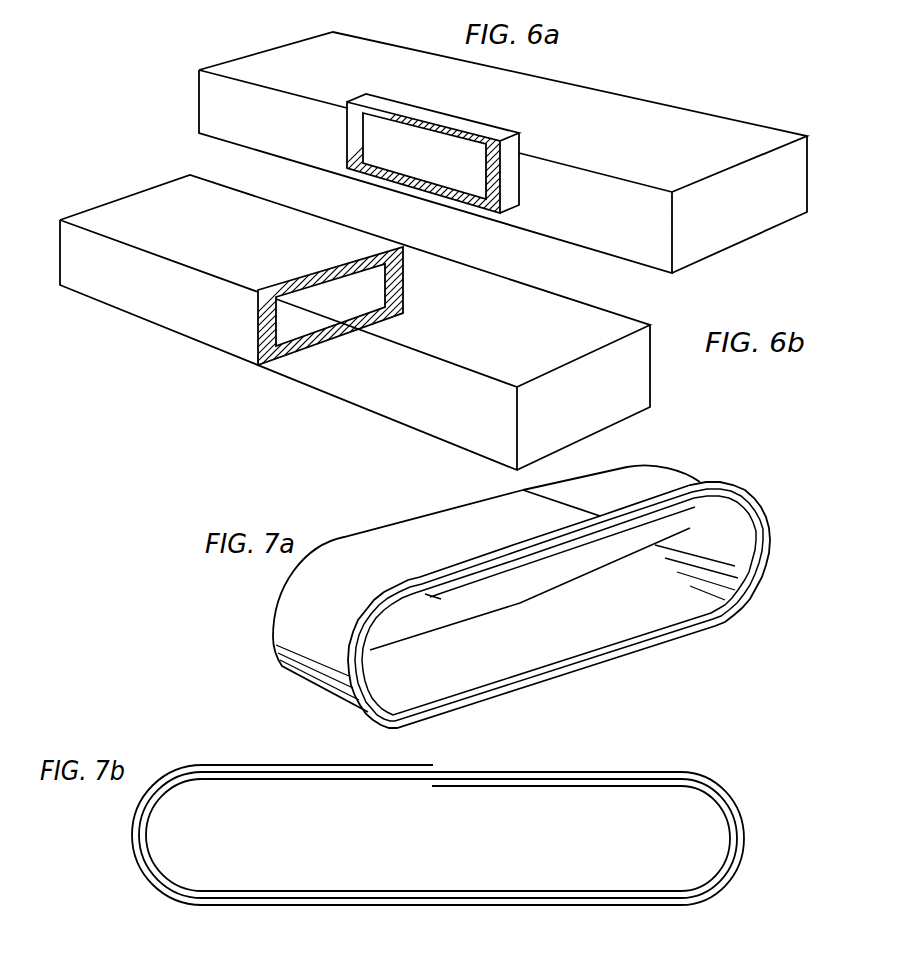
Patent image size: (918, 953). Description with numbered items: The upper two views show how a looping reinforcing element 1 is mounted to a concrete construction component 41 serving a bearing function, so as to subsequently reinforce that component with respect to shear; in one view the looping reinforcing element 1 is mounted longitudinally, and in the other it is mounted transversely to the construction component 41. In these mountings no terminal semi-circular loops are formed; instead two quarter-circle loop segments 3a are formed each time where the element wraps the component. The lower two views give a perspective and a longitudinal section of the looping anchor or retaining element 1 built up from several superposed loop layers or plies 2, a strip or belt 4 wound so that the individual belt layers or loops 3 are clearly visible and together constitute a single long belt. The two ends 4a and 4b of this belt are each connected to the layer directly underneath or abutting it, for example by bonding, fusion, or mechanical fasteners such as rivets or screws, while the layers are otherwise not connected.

In FIG. 6A, the looping reinforcing element 1 is at (443, 198).
In FIG. 6B, the looping reinforcing element 1 is at (324, 266).
In FIG. 7A, the looping reinforcing element 1 is at (494, 596).
In FIG. 7B, the looping reinforcing element 1 is at (461, 844).
In FIG. 7A, the loop layers or plies 2 is at (641, 642).
In FIG. 7B, the loop layers or plies 2 is at (688, 904).
In FIG. 7A, the belt layers or loops 3 is at (768, 521).
In FIG. 7B, the belt layers or loops 3 is at (736, 808).
In FIG. 6A, the quarter-circle loop segments 3a is at (340, 178).
In FIG. 6B, the quarter-circle loop segments 3a is at (400, 248).
In FIG. 7B, the band strip 4 is at (441, 862).
In FIG. 7A, the belt end 4a is at (582, 510).
In FIG. 7B, the belt end 4a is at (433, 765).
In FIG. 7A, the belt end 4b is at (428, 598).
In FIG. 7B, the belt end 4b is at (436, 787).
In FIG. 6A, the construction component 41 is at (722, 130).
In FIG. 6B, the construction component 41 is at (592, 320).